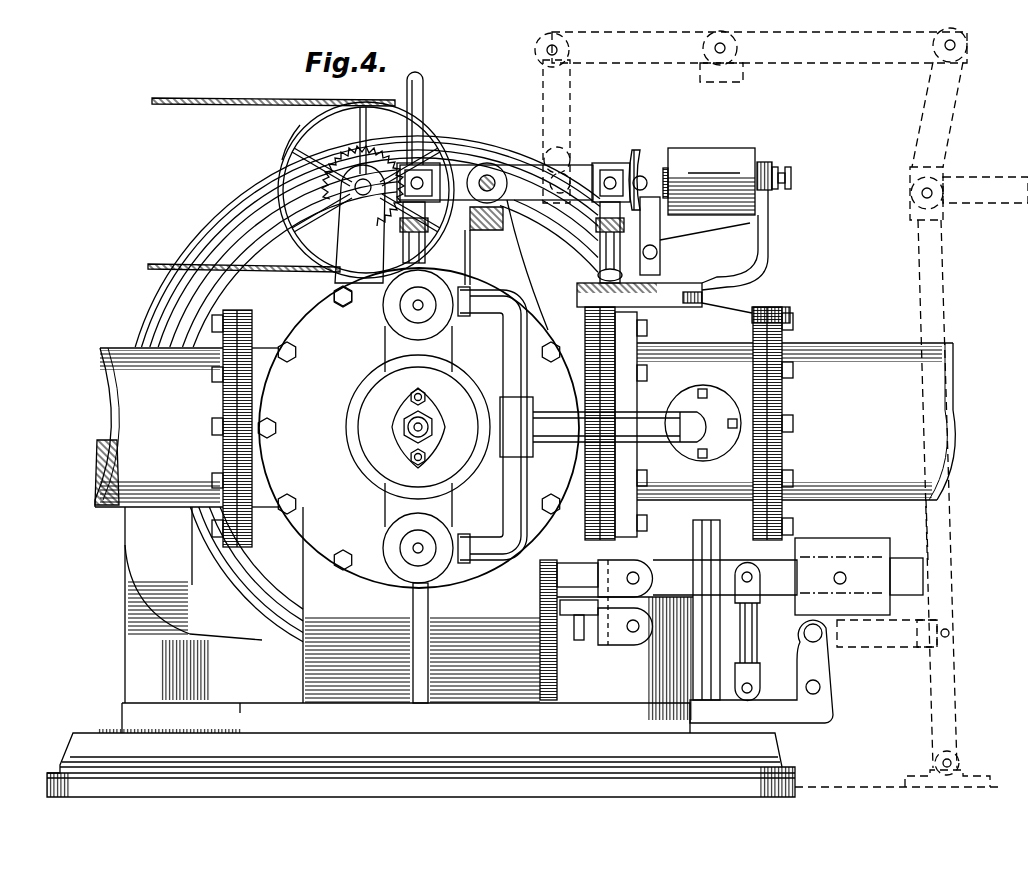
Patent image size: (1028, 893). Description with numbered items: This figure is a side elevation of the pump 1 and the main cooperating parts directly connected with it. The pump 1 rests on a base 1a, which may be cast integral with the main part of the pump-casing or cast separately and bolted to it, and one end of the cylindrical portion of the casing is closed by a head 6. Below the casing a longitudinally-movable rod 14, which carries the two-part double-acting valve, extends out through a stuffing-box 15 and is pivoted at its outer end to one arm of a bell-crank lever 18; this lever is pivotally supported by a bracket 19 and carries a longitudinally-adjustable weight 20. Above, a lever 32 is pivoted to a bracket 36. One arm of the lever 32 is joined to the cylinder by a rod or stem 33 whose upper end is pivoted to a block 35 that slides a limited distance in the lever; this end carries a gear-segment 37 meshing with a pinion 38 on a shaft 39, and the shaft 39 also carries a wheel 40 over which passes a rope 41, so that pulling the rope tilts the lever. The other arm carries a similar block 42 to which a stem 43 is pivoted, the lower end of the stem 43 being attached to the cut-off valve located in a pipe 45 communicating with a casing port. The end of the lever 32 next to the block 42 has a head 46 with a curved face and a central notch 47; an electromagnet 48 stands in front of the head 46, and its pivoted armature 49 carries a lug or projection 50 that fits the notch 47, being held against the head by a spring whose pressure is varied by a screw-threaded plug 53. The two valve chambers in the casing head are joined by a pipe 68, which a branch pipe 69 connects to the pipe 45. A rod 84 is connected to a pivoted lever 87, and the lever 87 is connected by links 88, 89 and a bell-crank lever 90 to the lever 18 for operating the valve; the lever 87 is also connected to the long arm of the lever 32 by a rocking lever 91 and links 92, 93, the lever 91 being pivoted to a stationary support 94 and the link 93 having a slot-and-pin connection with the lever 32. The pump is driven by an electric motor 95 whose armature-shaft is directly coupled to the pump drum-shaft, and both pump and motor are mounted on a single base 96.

The pump 1 is at (510, 563).
The base 1a is at (393, 717).
The head 6 is at (418, 428).
The longitudinally-movable rod 14 is at (580, 620).
The stuffing-box 15 is at (578, 642).
The bell-crank lever 18 is at (697, 620).
The bracket 19 is at (565, 565).
The longitudinally-adjustable weight 20 is at (859, 576).
The lever 32 is at (496, 186).
The rod or stem 33 is at (420, 240).
The block 35 is at (430, 182).
The bracket 36 is at (506, 265).
The gear-segment 37 is at (388, 230).
The pinion 38 is at (348, 134).
The shaft 39 is at (364, 195).
The wheel 40 is at (282, 148).
The rope 41 is at (228, 104).
The block 42 is at (610, 170).
The stem 43 is at (603, 250).
The pipe 45 is at (715, 392).
The head 46 is at (635, 152).
The notch 47 is at (640, 172).
The electromagnet 48 is at (720, 181).
The pivoted armature 49 is at (652, 232).
The lug or projection 50 is at (650, 183).
The screw-threaded plug 53 is at (786, 170).
The pipe 68 is at (527, 390).
The branch pipe 69 is at (668, 418).
The rod 84 is at (1005, 200).
The pivoted lever 87 is at (948, 575).
The link 88 is at (893, 645).
The link 89 is at (759, 632).
The bell-crank lever 90 is at (761, 671).
The rocking lever 91 is at (759, 45).
The link 92 is at (926, 116).
The link 93 is at (548, 100).
The stationary support 94 is at (725, 78).
The electric motor 95 is at (170, 292).
The base 96 is at (421, 765).